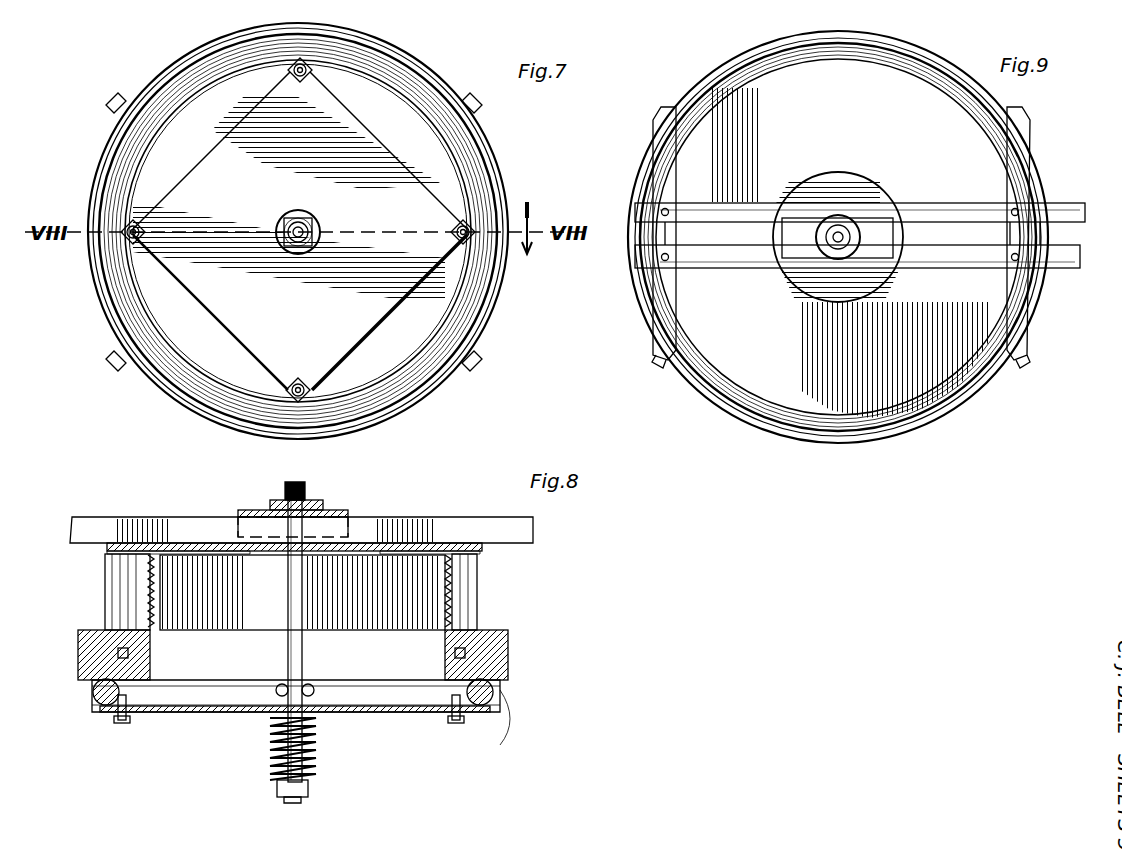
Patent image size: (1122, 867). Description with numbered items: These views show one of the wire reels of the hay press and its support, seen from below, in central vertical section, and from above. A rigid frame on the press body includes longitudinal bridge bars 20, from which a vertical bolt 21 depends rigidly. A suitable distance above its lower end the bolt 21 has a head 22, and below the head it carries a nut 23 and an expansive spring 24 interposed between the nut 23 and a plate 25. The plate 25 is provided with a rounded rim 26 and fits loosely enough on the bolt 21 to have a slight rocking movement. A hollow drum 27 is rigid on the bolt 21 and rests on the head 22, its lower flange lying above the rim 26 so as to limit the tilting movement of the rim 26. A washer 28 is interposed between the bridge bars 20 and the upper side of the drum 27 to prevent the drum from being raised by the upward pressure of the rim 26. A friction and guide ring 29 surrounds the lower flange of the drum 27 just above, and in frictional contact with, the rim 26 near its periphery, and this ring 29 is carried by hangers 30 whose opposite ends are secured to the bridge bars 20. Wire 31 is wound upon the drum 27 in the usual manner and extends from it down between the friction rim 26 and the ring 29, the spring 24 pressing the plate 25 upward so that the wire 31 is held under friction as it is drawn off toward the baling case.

In FIG. 9, the bridge bars 20 is at (648, 212).
In FIG. 8, the bridge bars 20 is at (90, 520).
In FIG. 7, the vertical bolts 21 is at (300, 232).
In FIG. 9, the vertical bolts 21 is at (842, 232).
In FIG. 8, the vertical bolts 21 is at (285, 490).
In FIG. 8, the heads 22 is at (280, 692).
In FIG. 7, the nuts 23 is at (300, 254).
In FIG. 8, the nuts 23 is at (277, 790).
In FIG. 8, the expansive springs 24 is at (316, 760).
In FIG. 7, the plates 25 is at (298, 230).
In FIG. 8, the plates 25 is at (365, 712).
In FIG. 7, the rounded rim 26 is at (455, 365).
In FIG. 9, the rounded rim 26 is at (790, 420).
In FIG. 8, the rounded rim 26 is at (112, 700).
In FIG. 9, the hollow drums 27 is at (851, 253).
In FIG. 8, the hollow drums 27 is at (302, 592).
In FIG. 9, the washers 28 is at (805, 290).
In FIG. 8, the washers 28 is at (340, 553).
In FIG. 7, the friction and guide rings 29 is at (500, 320).
In FIG. 9, the friction and guide rings 29 is at (855, 440).
In FIG. 8, the friction and guide rings 29 is at (78, 636).
In FIG. 7, the hangers 30 is at (112, 100).
In FIG. 9, the hangers 30 is at (662, 305).
In FIG. 8, the hangers 30 is at (106, 578).
In FIG. 8, the wire 31 is at (446, 612).